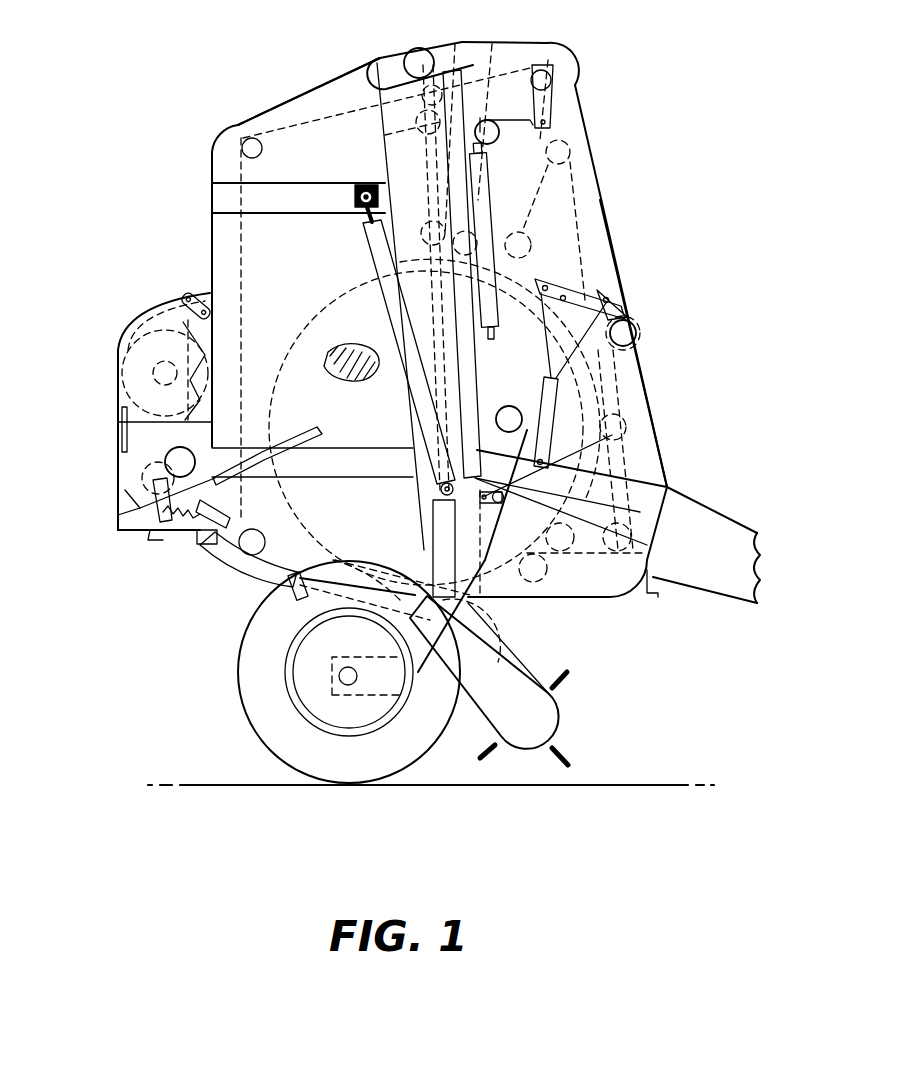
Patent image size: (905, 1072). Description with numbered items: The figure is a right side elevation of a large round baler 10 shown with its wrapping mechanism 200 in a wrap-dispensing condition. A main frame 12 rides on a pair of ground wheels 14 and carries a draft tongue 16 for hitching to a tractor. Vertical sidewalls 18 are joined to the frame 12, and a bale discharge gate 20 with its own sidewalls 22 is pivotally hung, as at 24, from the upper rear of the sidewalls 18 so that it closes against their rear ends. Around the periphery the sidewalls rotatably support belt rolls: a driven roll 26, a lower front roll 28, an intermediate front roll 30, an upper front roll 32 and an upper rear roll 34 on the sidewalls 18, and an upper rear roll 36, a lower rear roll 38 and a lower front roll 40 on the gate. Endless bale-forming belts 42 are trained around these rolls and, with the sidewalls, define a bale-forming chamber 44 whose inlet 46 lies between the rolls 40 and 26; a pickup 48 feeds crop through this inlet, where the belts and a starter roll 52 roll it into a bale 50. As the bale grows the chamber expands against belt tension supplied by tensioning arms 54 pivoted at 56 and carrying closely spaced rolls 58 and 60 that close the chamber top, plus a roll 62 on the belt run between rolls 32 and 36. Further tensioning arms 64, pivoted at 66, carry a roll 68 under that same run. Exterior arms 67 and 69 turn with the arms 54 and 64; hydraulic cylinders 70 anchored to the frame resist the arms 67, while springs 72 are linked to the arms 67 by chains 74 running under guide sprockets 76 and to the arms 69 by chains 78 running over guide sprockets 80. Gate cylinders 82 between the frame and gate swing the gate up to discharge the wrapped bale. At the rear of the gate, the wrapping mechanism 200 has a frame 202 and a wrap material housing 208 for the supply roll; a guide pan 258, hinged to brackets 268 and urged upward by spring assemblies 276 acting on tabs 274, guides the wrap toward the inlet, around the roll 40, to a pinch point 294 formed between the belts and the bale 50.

The large round baler 10 is at (713, 262).
The main frame 12 is at (667, 488).
The ground wheels 14 is at (238, 664).
The draft tongue 16 is at (722, 522).
The vertical sidewalls 18 is at (580, 108).
The bale discharge gate 20 is at (210, 167).
The gate sidewalls 22 is at (297, 98).
The gate pivot 24 is at (419, 48).
The driven roll 26 is at (565, 560).
The lower front roll 28 is at (652, 549).
The intermediate front roll 30 is at (627, 426).
The upper front roll 32 is at (571, 152).
The upper rear roll 34 is at (385, 136).
The upper rear roll 36 is at (262, 152).
The lower rear roll 38 is at (266, 545).
The lower front roll 40 is at (457, 630).
The bale-forming belts 42 is at (241, 241).
The bale-forming chamber 44 is at (440, 260).
The inlet 46 is at (508, 603).
The pickup 48 is at (530, 660).
The bale 50 is at (350, 350).
The starter roll 52 is at (500, 505).
The tensioning arms 54 is at (540, 252).
The tensioning arm pivot 56 is at (636, 331).
The roll 58 is at (416, 277).
The roll 60 is at (494, 190).
The roll 62 is at (493, 220).
The belt tensioning arms 64 is at (494, 50).
The arm pivot 66 is at (548, 62).
The arms 67 is at (600, 288).
The roll 68 is at (455, 44).
The arms 69 is at (556, 80).
The hydraulic cylinders 70 is at (552, 440).
The springs 72 is at (497, 334).
The chains 74 is at (493, 384).
The guide sprockets 76 is at (496, 420).
The chains 78 is at (522, 122).
The guide sprockets 80 is at (497, 142).
The gate cylinders 82 is at (384, 302).
The wrapping mechanism 200 is at (110, 545).
The frame 202 is at (118, 482).
The wrap material housing 208 is at (118, 350).
The wrap material guide pan 258 is at (228, 580).
The brackets 268 is at (205, 546).
The tabs 274 is at (298, 602).
The spring assemblies 276 is at (335, 558).
The pinch point 294 is at (508, 648).